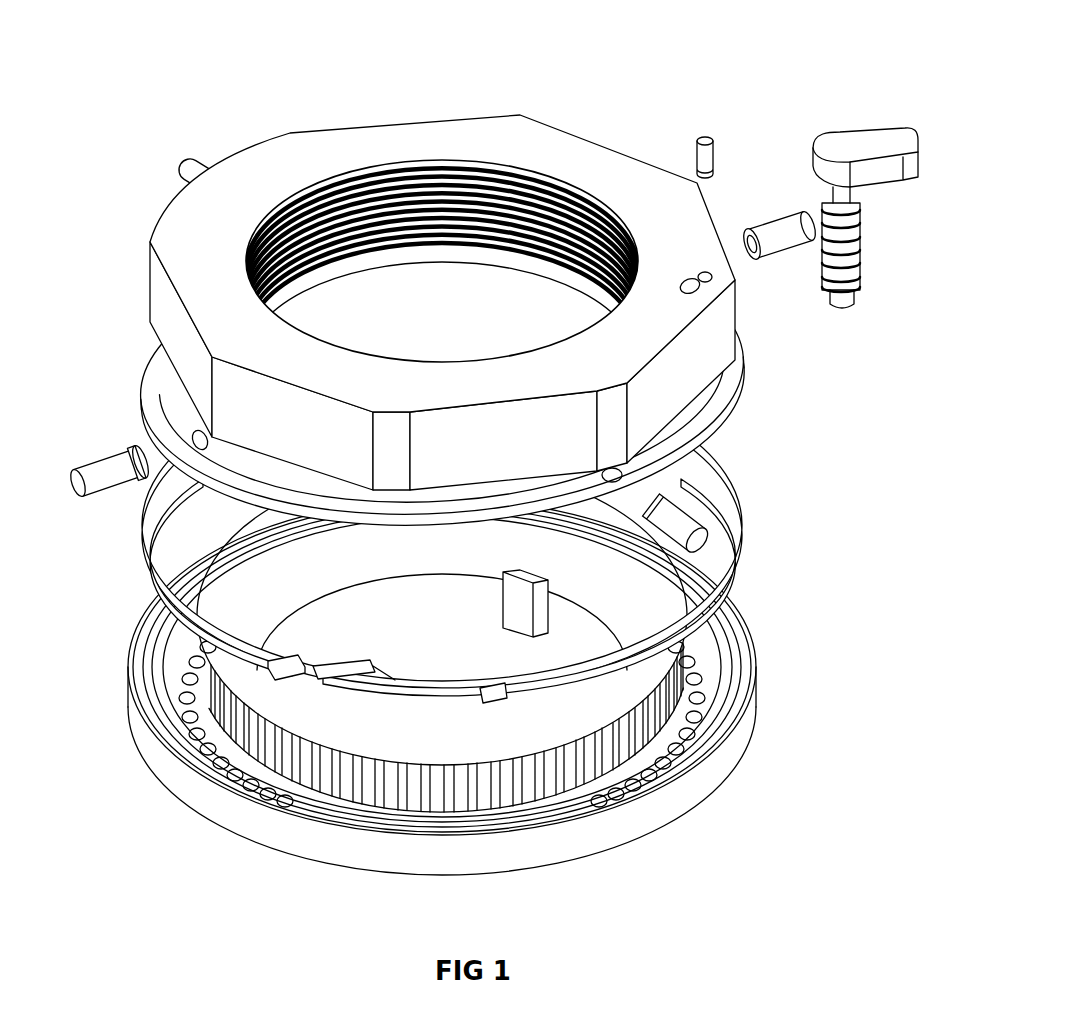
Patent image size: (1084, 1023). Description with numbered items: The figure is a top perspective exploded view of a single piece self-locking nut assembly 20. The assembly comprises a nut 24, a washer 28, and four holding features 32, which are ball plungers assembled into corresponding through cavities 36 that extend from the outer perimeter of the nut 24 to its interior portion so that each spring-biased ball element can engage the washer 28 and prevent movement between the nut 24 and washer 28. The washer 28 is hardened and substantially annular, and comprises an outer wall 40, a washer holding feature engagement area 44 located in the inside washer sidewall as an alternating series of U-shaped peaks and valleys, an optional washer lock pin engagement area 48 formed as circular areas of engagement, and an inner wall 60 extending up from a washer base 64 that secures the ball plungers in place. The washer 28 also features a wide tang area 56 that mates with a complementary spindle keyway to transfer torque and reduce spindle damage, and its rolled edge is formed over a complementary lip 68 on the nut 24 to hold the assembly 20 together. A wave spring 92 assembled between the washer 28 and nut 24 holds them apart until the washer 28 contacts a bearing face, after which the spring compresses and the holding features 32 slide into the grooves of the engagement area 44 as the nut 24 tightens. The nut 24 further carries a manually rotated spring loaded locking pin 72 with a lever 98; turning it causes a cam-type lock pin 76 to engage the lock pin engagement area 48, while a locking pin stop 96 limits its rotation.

The self-locking nut assembly 20 is at (492, 473).
The nut 24 is at (433, 324).
The washer 28 is at (458, 685).
The holding features 32 is at (207, 160).
The through cavities 36 is at (703, 430).
The outer wall 40 is at (745, 665).
The washer holding feature engagement area 44 is at (442, 685).
The washer lock pin engagement area 48 is at (703, 655).
The wide tang area 56 is at (507, 620).
The inner wall 60 is at (340, 757).
The washer base 64 is at (163, 703).
The complementary lip 68 is at (743, 398).
The locking pin 72 is at (874, 212).
The lock pin 76 is at (843, 303).
The wave spring 92 is at (743, 522).
The locking pin stop 96 is at (713, 150).
The lever 98 is at (888, 187).